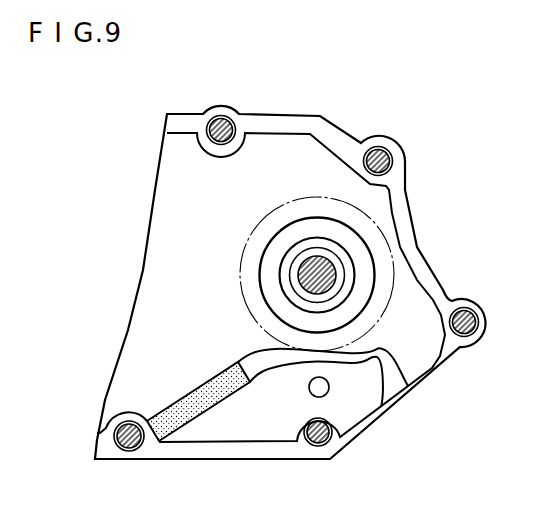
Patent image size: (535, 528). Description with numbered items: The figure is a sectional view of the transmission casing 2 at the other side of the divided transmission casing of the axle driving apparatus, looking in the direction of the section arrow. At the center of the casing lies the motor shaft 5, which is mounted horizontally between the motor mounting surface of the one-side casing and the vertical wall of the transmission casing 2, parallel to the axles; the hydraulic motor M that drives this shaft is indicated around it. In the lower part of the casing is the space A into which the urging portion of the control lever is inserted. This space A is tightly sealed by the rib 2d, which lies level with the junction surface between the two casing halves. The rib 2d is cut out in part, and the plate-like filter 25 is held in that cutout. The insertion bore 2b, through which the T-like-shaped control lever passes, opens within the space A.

The transmission casing 2 is at (417, 252).
The motor shaft 5 is at (338, 245).
The hydraulic motor M is at (393, 270).
The plate-like filter 25 is at (186, 396).
The rib 2d is at (258, 352).
The insertion bore 2b is at (329, 390).
The space A is at (262, 413).